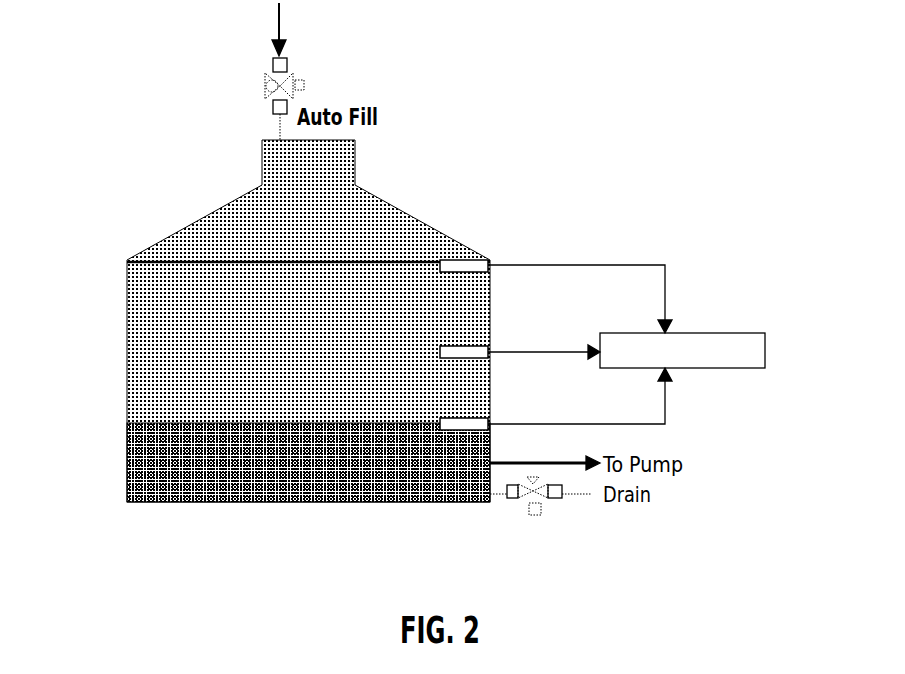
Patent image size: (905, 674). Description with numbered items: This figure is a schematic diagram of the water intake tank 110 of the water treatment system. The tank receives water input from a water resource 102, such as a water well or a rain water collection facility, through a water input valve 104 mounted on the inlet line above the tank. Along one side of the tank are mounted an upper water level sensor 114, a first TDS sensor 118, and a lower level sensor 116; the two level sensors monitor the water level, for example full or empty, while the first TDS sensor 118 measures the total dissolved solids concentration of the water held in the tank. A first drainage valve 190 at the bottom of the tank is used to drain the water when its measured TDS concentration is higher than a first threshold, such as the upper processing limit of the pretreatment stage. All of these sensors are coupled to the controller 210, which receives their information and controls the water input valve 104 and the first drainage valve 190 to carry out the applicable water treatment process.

The water resource 102 is at (275, 25).
The water input valve 104 is at (263, 88).
The water intake tank 110 is at (127, 362).
The upper water level sensor 114 is at (472, 261).
The lower level sensor 116 is at (488, 418).
The first TDS sensor 118 is at (488, 347).
The first drainage valve 190 is at (557, 500).
The controller 210 is at (735, 333).